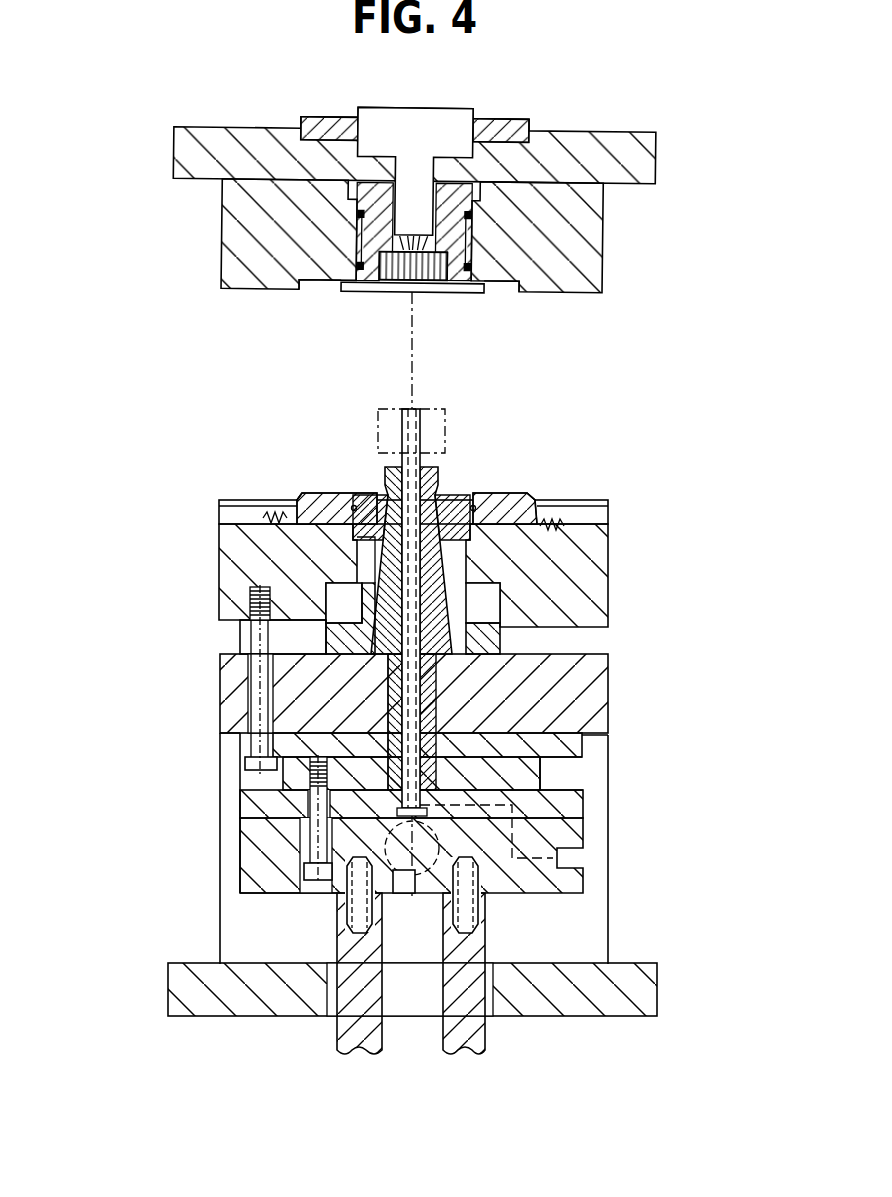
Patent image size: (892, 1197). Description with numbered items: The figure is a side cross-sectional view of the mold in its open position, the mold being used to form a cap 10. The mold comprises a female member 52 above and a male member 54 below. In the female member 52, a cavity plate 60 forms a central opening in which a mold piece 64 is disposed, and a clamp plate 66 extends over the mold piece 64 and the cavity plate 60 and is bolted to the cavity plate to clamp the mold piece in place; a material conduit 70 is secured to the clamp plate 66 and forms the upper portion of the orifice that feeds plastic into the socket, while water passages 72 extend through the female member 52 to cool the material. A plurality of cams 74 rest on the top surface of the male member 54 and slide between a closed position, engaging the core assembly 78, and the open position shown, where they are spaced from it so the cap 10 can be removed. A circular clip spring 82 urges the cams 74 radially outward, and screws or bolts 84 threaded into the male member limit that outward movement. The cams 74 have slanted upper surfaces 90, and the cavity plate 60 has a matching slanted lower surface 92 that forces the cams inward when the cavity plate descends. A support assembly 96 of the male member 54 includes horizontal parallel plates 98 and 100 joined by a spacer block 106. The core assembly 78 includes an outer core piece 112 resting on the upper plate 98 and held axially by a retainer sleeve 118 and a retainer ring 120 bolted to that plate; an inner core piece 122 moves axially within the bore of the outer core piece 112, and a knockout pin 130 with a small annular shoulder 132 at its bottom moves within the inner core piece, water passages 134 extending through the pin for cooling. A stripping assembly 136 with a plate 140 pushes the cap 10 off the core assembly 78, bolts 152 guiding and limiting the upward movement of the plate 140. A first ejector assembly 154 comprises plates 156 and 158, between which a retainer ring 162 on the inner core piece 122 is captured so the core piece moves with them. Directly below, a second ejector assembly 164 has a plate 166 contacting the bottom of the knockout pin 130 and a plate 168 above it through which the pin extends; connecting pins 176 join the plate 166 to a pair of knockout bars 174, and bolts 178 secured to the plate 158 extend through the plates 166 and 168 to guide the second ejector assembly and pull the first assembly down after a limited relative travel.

The cap 10 is at (440, 404).
The female member 52 is at (570, 127).
The male member 54 is at (212, 749).
The cavity plate 60 is at (264, 291).
The mold piece 64 is at (462, 280).
The clamp plate 66 is at (615, 134).
The material conduit 70 is at (408, 126).
The water passages 72 is at (341, 118).
The cams 74 is at (325, 494).
The core assembly 78 is at (390, 683).
The spring 82 is at (377, 493).
The screws or bolts 84 is at (274, 514).
The upper surfaces 90 is at (297, 496).
The lower surface 92 is at (303, 292).
The support assembly 96 is at (608, 691).
The plate 98 is at (600, 720).
The plate 100 is at (584, 962).
The spacer block 106 is at (594, 910).
The outer core piece 112 is at (443, 572).
The retainer sleeve 118 is at (360, 611).
The retainer ring 120 is at (317, 642).
The inner core piece 122 is at (434, 609).
The knockout pin 130 is at (478, 644).
The annular shoulder 132 is at (438, 862).
The water passages 134 is at (418, 437).
The stripping assembly 136 is at (216, 523).
The plate 140 is at (240, 553).
The bolts 152 is at (260, 715).
The first ejector assembly 154 is at (558, 767).
The plate 156 is at (587, 748).
The plate 158 is at (528, 782).
The retainer ring 162 is at (450, 722).
The second ejector assembly 164 is at (232, 845).
The plate 166 is at (243, 890).
The plate 168 is at (250, 808).
The knockout bars 174 is at (348, 1035).
The connecting pins 176 is at (356, 908).
The bolts 178 is at (298, 855).